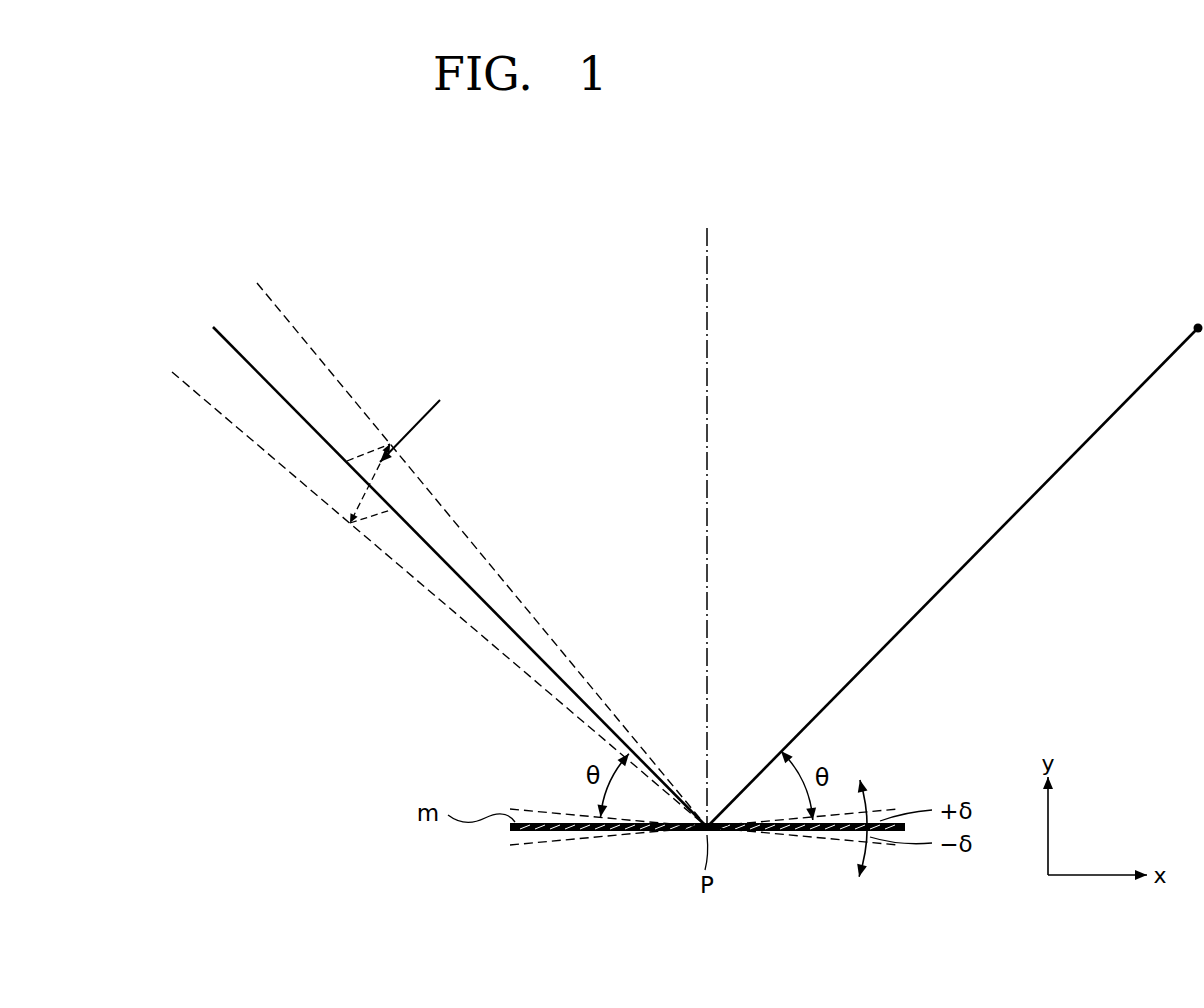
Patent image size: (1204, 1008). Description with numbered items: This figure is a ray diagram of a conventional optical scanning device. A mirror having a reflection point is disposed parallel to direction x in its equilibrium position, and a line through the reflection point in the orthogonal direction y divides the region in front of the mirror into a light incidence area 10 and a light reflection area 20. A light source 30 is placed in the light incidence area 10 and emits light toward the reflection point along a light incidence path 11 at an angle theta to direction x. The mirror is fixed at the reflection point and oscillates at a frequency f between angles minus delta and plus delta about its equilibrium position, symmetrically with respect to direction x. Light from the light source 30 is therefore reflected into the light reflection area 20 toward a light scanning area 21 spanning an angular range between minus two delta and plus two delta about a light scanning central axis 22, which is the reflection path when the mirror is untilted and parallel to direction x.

The light incidence area 10 is at (707, 208).
The light incidence path 11 is at (960, 572).
The light reflection area 20 is at (145, 225).
The light scanning area 21 is at (248, 269).
The light scanning central axis 22 is at (458, 575).
The light source 30 is at (1195, 325).